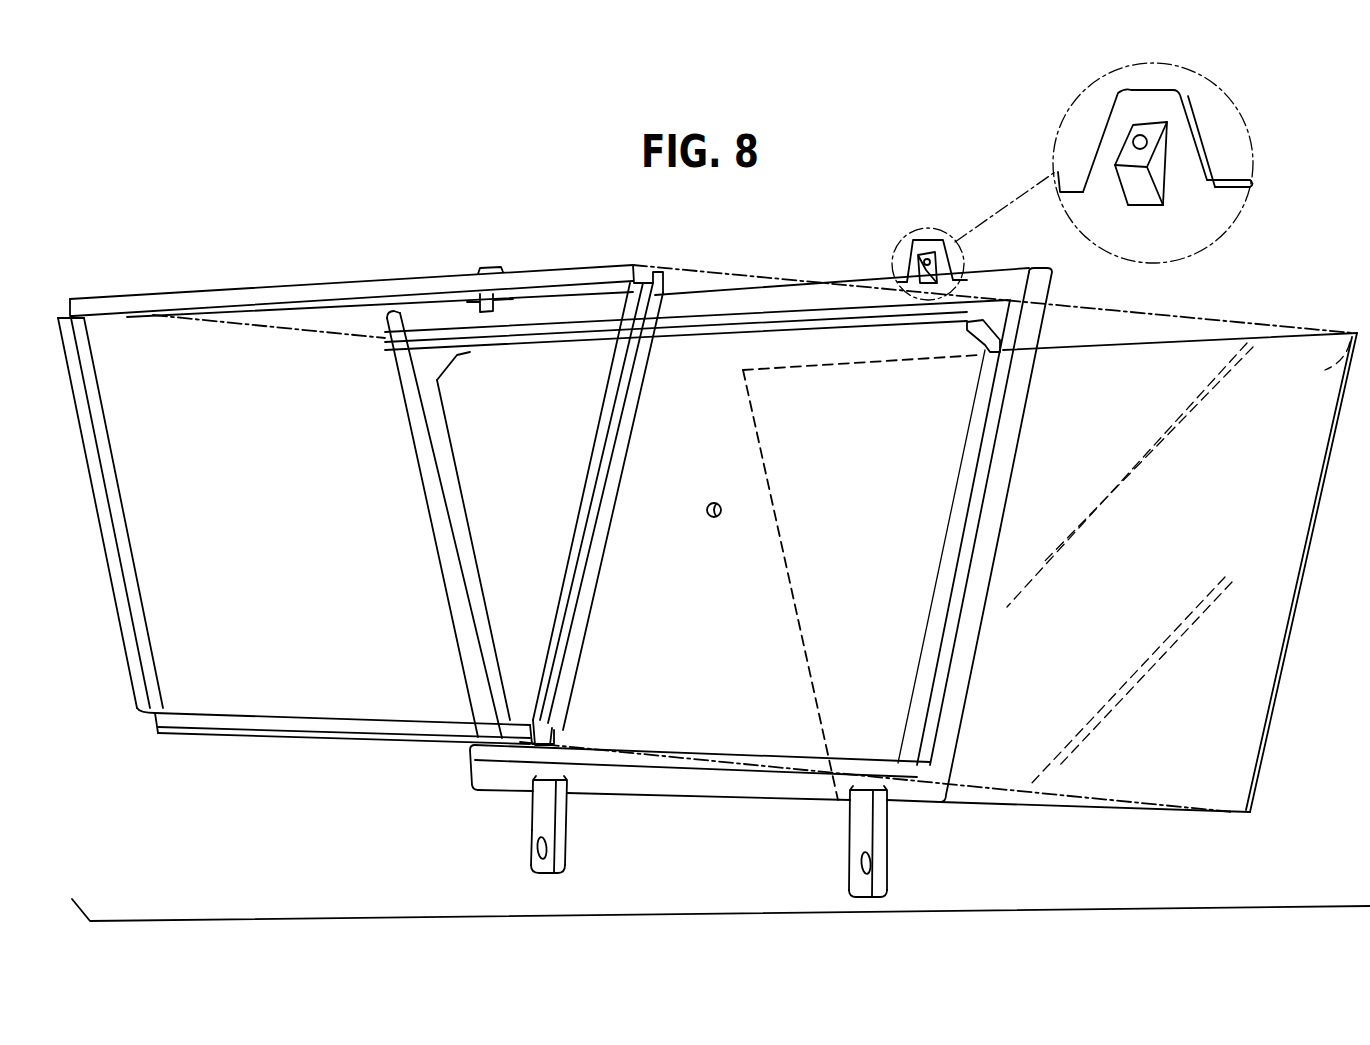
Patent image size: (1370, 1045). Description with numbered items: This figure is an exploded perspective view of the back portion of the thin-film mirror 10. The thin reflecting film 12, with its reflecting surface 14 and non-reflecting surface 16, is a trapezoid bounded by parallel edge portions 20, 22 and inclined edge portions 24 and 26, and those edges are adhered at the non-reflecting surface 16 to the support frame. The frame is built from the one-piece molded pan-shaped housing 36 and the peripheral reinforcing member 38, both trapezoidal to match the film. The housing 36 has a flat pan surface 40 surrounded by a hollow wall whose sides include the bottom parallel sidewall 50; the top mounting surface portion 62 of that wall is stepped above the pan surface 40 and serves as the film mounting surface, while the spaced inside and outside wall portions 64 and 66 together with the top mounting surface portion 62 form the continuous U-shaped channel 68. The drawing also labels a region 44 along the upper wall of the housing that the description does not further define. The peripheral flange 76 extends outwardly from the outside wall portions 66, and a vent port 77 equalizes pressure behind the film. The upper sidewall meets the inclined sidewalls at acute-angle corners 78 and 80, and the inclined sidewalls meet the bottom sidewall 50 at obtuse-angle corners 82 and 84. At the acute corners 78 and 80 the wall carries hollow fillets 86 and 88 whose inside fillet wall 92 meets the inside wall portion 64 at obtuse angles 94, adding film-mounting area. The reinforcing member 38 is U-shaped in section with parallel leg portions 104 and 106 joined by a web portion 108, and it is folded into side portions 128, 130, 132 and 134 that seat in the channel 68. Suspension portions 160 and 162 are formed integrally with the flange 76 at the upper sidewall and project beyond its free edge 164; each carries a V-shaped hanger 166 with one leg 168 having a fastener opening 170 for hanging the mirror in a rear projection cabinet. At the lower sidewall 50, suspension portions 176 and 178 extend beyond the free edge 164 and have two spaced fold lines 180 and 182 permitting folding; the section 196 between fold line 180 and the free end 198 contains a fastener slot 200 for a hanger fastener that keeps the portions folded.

The thin-film mirror 10 is at (376, 192).
The thin reflecting film 12 is at (1224, 336).
The reflecting surface 14 is at (1351, 330).
The non-reflecting surface 16 is at (1279, 350).
The parallel edge portion 20 is at (1175, 337).
The parallel edge portion 22 is at (1103, 806).
The inclined edge portion 24 is at (800, 628).
The inclined edge portion 26 is at (1303, 604).
The pan-shaped housing 36 is at (829, 278).
The reinforcing member 38 is at (268, 282).
The pan surface 40 is at (760, 565).
The top rail 44 is at (705, 288).
The bottom parallel sidewall 50 is at (740, 802).
The top mounting surface portion 62 is at (999, 401).
The inside wall portion 64 is at (968, 438).
The outside wall portion 66 is at (441, 410).
The U-shaped channel 68 is at (965, 512).
The flange 76 is at (436, 514).
The vent port 77 is at (707, 512).
The corner 78 is at (393, 338).
The corner 80 is at (1028, 271).
The corner 82 is at (947, 801).
The corner 84 is at (480, 776).
The hollow fillet 86 is at (1000, 336).
The hollow fillet 88 is at (435, 363).
The inside fillet wall 92 is at (966, 327).
The obtuse angle 94 is at (447, 345).
The leg portion 104 is at (556, 657).
The leg portion 106 is at (602, 577).
The web portion 108 is at (132, 552).
The side portion 128 is at (131, 319).
The side portion 130 is at (315, 712).
The side portion 132 is at (123, 480).
The side portion 134 is at (594, 440).
The suspension portion 160 is at (930, 240).
The suspension portion 162 is at (490, 266).
The free edge 164 is at (1007, 266).
The V-shaped hanger 166 is at (1120, 202).
The leg 168 is at (1123, 155).
The fastener opening 170 is at (1145, 141).
The suspension portion 176 is at (892, 875).
The suspension portion 178 is at (570, 850).
The fold line 180 is at (533, 814).
The fold line 182 is at (889, 800).
The section 196 is at (531, 870).
The free end 198 is at (547, 878).
The fastener slot 200 is at (534, 850).